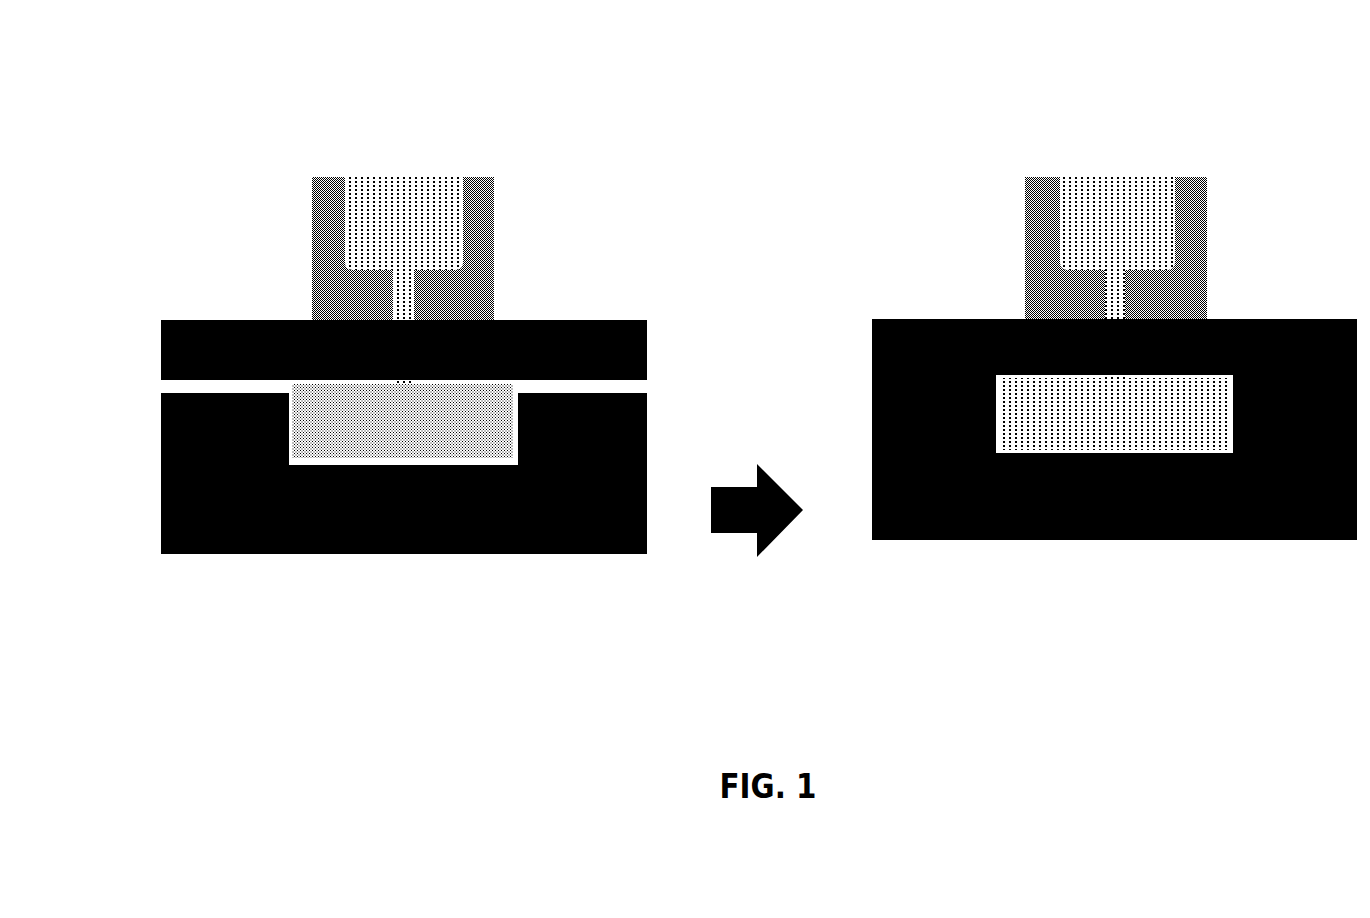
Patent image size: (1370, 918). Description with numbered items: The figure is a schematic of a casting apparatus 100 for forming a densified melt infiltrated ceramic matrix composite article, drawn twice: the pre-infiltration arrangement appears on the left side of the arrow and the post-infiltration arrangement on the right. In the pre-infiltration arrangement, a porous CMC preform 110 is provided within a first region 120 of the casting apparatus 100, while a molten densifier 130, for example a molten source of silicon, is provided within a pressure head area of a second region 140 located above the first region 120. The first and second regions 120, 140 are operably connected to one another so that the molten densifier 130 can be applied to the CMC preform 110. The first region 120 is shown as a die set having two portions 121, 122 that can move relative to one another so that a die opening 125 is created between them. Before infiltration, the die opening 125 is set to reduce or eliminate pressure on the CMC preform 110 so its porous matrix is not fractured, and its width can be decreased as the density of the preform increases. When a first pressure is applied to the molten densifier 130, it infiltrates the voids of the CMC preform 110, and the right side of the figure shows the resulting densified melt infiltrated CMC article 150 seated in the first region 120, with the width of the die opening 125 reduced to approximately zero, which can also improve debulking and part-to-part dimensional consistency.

The casting apparatus 100 is at (653, 127).
The CMC preform 110 is at (424, 427).
The first region 120 is at (152, 318).
The die set portion 121 is at (582, 322).
The die set portion 122 is at (560, 555).
The die opening 125 is at (650, 387).
The molten densifier 130 is at (424, 220).
The second region 140 is at (299, 178).
The densified melt infiltrated CMC article 150 is at (1098, 427).